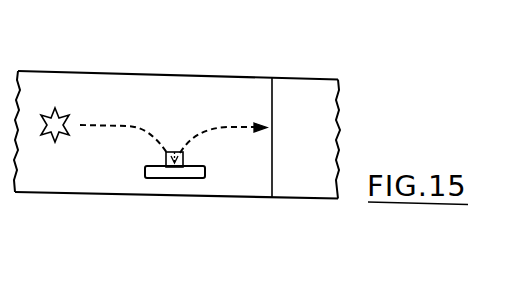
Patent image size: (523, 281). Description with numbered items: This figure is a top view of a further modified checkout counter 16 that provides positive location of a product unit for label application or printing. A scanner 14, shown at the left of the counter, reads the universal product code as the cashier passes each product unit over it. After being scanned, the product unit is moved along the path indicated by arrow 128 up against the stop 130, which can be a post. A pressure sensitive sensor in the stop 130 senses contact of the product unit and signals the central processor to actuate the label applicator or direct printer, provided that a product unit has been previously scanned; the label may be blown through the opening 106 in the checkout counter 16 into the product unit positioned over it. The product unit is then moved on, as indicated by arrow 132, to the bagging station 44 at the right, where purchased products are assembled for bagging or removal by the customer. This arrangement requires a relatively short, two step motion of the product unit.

The scanner 14 is at (49, 107).
The checkout counter 16 is at (188, 72).
The bagging station 44 is at (302, 92).
The opening 106 is at (183, 157).
The arrow 128 is at (115, 125).
The stop 130 is at (168, 178).
The arrow 132 is at (228, 127).